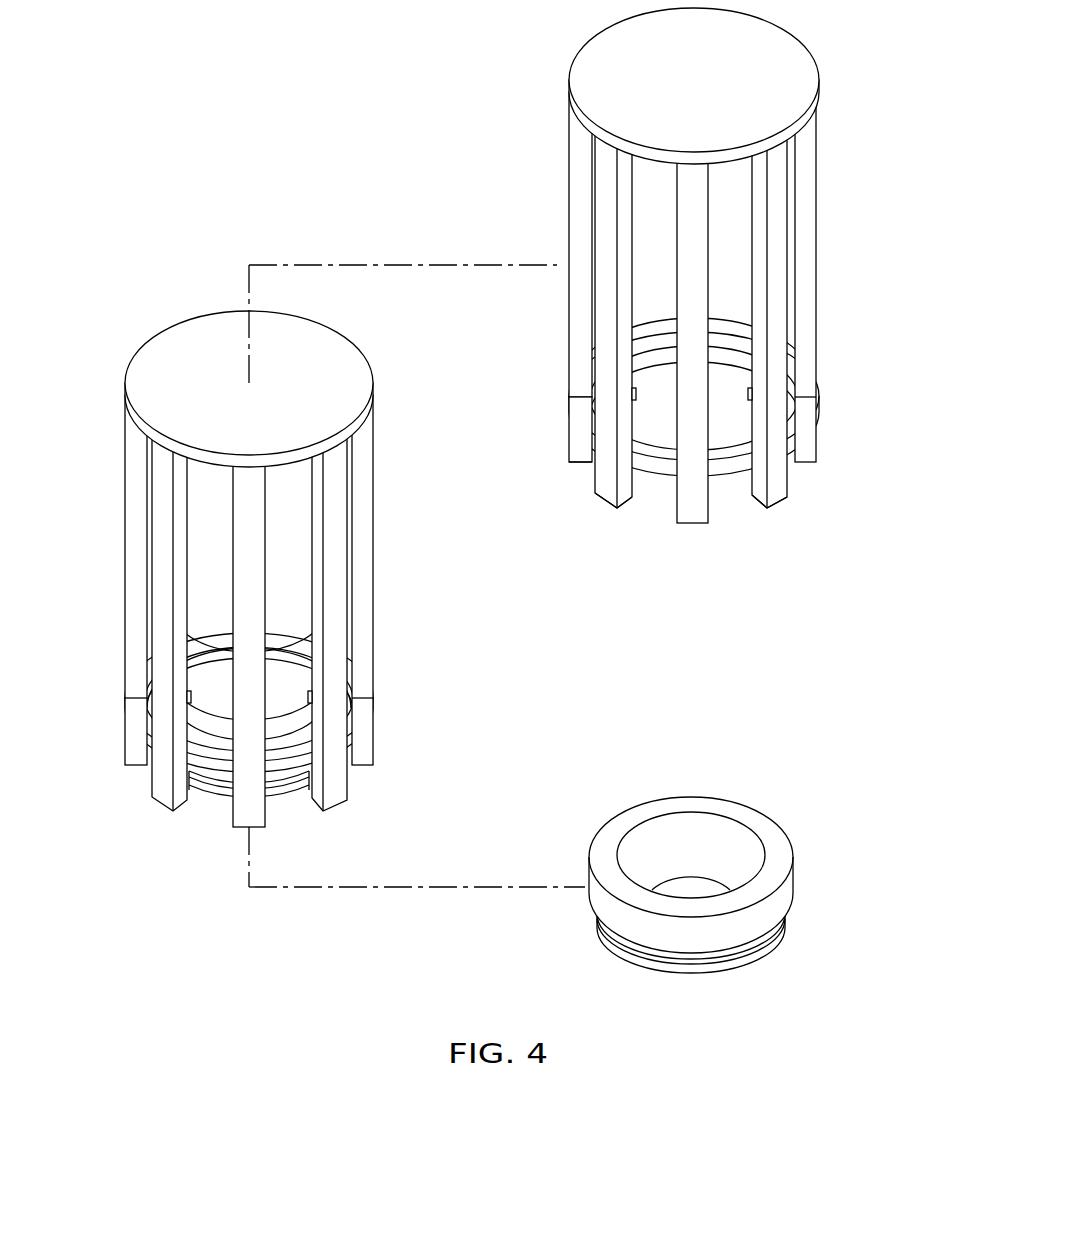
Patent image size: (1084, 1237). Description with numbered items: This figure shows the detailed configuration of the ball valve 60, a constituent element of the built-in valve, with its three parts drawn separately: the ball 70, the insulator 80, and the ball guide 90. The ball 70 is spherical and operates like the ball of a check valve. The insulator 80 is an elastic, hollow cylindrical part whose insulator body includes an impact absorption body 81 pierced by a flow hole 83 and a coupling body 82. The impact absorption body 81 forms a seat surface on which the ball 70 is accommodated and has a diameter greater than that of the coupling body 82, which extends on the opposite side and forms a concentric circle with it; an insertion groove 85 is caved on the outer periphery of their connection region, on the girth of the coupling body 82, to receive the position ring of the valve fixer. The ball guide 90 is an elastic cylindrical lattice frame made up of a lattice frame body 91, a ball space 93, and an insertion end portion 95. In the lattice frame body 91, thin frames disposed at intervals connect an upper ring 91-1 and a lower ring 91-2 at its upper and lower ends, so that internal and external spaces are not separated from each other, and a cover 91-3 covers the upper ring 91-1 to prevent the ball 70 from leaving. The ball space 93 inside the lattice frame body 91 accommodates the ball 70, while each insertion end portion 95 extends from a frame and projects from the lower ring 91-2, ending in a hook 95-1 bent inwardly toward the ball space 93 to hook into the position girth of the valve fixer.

The ball valve 60 is at (150, 296).
The ball 70 is at (210, 572).
The insulator 80 is at (200, 722).
The impact absorption body 81 is at (790, 883).
The coupling body 82 is at (770, 942).
The flow hole 83 is at (727, 832).
The insertion groove 85 is at (780, 932).
The ball guide 90 is at (165, 480).
The lattice frame body 91 is at (805, 268).
The upper ring 91-1 is at (575, 108).
The lower ring 91-2 is at (580, 425).
The cover 91-3 is at (775, 48).
The ball space 93 is at (728, 210).
The insertion end portion 95 is at (818, 430).
The hook 95-1 is at (580, 445).